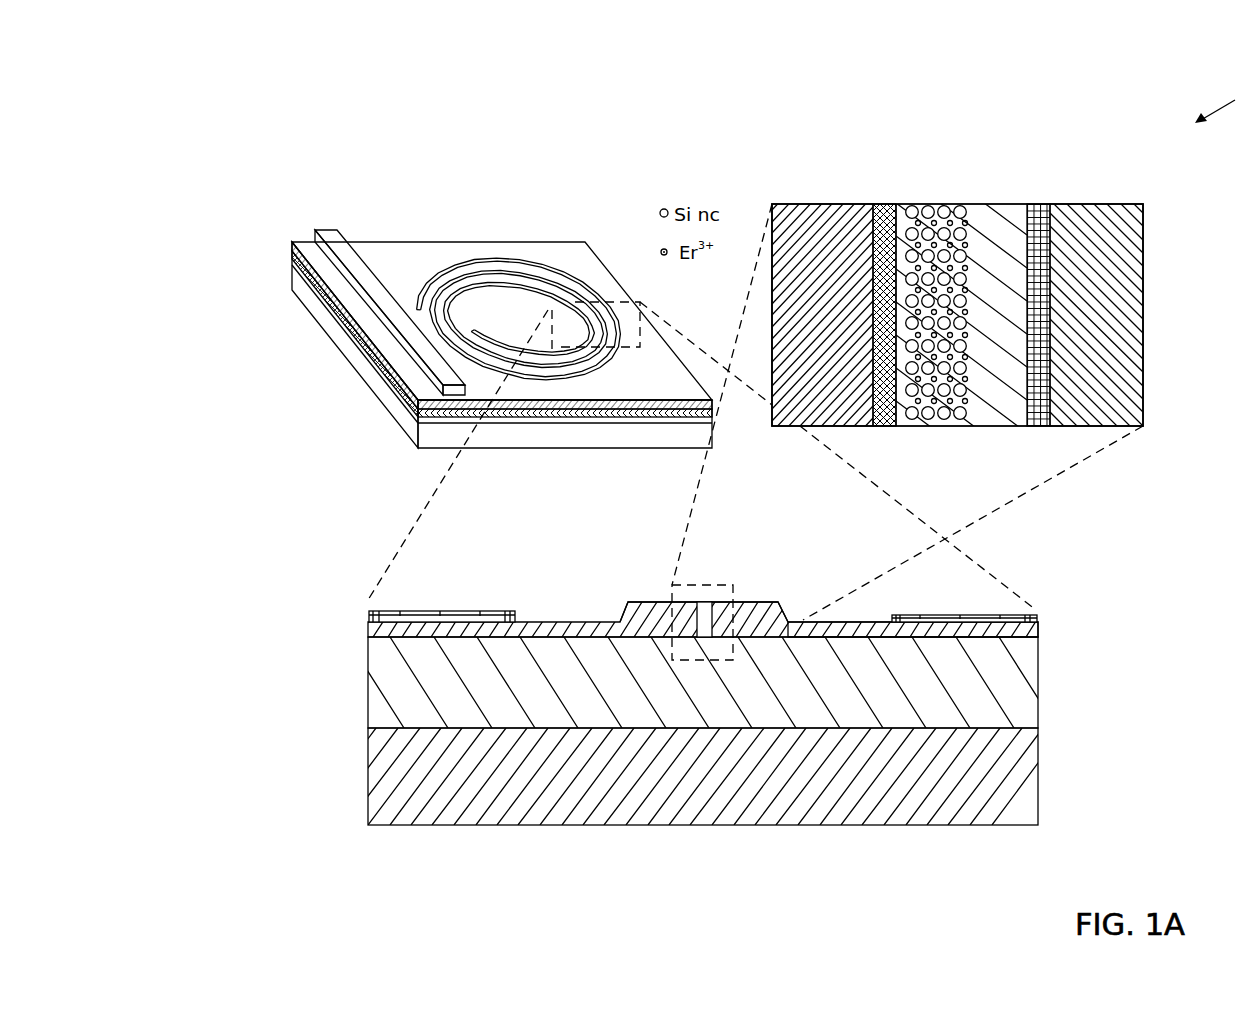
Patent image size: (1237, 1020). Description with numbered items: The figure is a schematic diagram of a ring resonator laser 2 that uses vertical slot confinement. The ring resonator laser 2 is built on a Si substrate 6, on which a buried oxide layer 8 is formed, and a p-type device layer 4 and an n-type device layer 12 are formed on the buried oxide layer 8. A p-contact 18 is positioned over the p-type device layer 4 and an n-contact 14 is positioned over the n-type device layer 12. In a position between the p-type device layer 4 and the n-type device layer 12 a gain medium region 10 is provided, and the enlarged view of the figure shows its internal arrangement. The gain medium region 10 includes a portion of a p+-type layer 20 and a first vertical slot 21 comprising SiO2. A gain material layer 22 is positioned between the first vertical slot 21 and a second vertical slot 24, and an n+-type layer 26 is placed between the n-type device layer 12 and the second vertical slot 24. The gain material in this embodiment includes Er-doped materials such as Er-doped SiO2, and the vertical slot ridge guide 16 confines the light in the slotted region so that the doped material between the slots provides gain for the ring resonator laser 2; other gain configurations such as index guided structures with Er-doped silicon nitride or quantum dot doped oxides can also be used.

The ring resonator laser 2 is at (212, 624).
The p-type device layer 4 is at (368, 623).
The Si substrate 6 is at (537, 816).
The buried oxide layer 8 is at (1027, 696).
The gain medium region 10 is at (705, 603).
The n-type device layer 12 is at (1030, 633).
The n-contact 14 is at (970, 613).
The vertical slot ridge guide / p type region 16 is at (626, 608).
The p-contact 18 is at (418, 610).
The p+-type layer 20 is at (882, 202).
The first vertical slot 21 is at (904, 195).
The gain material layer 22 is at (928, 202).
The second vertical slot 24 is at (997, 202).
The n+ region 26 is at (1037, 202).